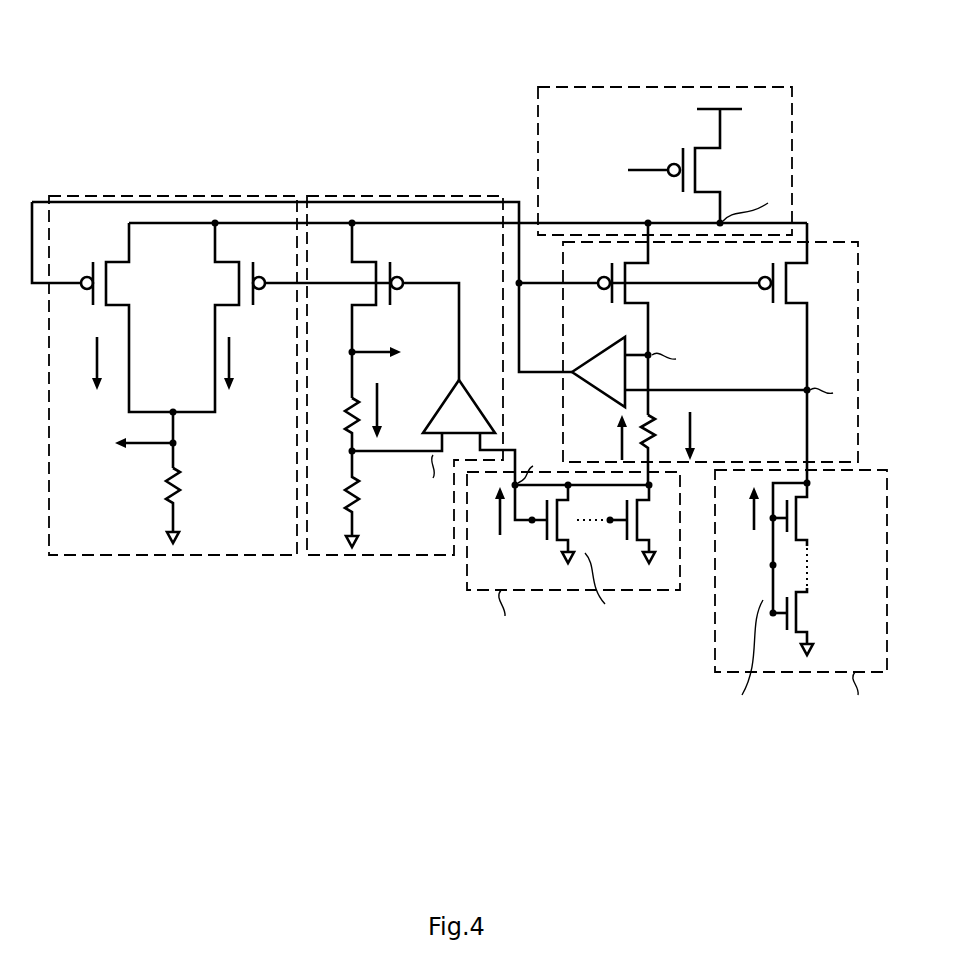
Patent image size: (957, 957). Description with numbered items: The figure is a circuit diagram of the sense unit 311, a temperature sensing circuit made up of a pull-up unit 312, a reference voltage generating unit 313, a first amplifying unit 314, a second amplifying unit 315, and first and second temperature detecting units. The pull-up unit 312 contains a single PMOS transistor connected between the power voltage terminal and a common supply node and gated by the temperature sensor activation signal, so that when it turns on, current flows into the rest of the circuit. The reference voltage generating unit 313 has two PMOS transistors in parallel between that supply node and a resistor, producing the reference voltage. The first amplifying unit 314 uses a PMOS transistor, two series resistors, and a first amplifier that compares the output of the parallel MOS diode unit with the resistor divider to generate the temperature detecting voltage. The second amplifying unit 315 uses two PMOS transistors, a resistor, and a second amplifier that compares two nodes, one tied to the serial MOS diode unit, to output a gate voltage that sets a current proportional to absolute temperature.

The sense unit 311 is at (437, 100).
The pull-up unit 312 is at (701, 87).
The reference voltage generating unit 313 is at (250, 196).
The first amplifying unit 314 is at (362, 196).
The second amplifying unit 315 is at (835, 242).